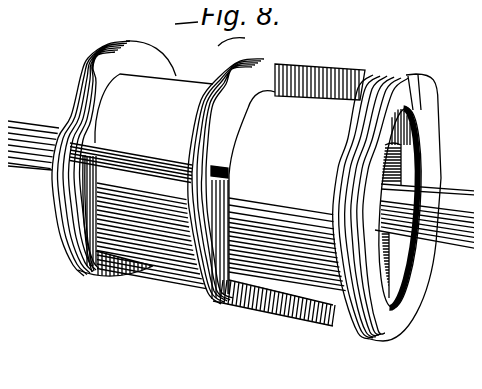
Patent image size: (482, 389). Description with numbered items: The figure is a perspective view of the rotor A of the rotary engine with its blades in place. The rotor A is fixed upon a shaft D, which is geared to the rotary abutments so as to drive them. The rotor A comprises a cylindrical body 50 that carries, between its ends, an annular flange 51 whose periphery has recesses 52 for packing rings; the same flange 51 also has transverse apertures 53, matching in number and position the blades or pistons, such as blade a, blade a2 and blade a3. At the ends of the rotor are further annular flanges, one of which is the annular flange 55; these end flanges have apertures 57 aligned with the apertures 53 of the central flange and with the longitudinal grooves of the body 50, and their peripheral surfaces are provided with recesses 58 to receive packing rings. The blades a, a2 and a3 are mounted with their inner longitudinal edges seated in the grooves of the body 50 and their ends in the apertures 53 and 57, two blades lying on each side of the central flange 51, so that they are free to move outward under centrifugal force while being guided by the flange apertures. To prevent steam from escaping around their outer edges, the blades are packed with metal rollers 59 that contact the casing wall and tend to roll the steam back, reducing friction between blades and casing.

The cylindrical body 50 is at (287, 192).
The annular flange 51 is at (237, 64).
The peripheral recesses 52 is at (222, 62).
The transverse apertures 53 is at (221, 160).
The annular flange 55 is at (417, 89).
The apertures 57 is at (112, 44).
The recesses 58 is at (83, 45).
The metal rollers 59 is at (162, 153).
The blade a is at (136, 150).
The blade a2 is at (311, 49).
The blade a3 is at (273, 308).
The shaft D is at (455, 183).
The rotor A is at (31, 98).